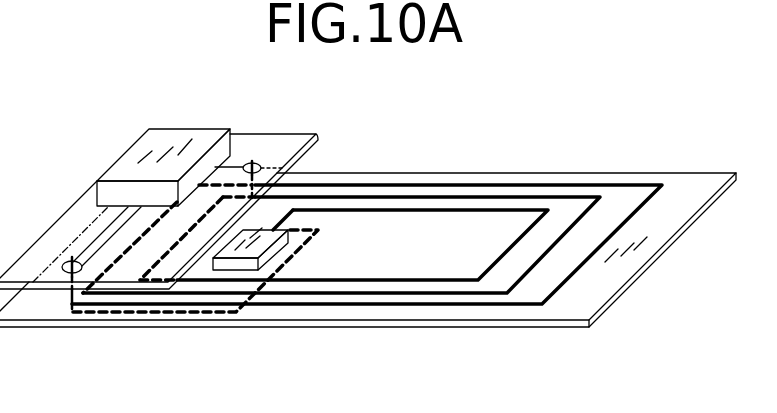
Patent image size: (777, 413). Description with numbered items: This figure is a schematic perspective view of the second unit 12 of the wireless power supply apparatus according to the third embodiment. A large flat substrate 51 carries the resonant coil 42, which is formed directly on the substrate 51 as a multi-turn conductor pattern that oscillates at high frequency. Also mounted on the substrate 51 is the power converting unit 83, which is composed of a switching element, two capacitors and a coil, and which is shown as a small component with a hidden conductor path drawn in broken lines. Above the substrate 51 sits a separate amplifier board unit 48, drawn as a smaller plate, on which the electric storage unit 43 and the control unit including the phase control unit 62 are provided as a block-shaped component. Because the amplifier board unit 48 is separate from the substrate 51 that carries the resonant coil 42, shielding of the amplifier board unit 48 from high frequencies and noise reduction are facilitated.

The second unit 12 is at (490, 140).
The resonant coil 42 is at (390, 184).
The electric storage unit 43 is at (163, 128).
The amplifier board unit 48 is at (278, 134).
The substrate 51 is at (560, 171).
The phase control unit 62 is at (163, 140).
The power converting unit 83 is at (218, 266).